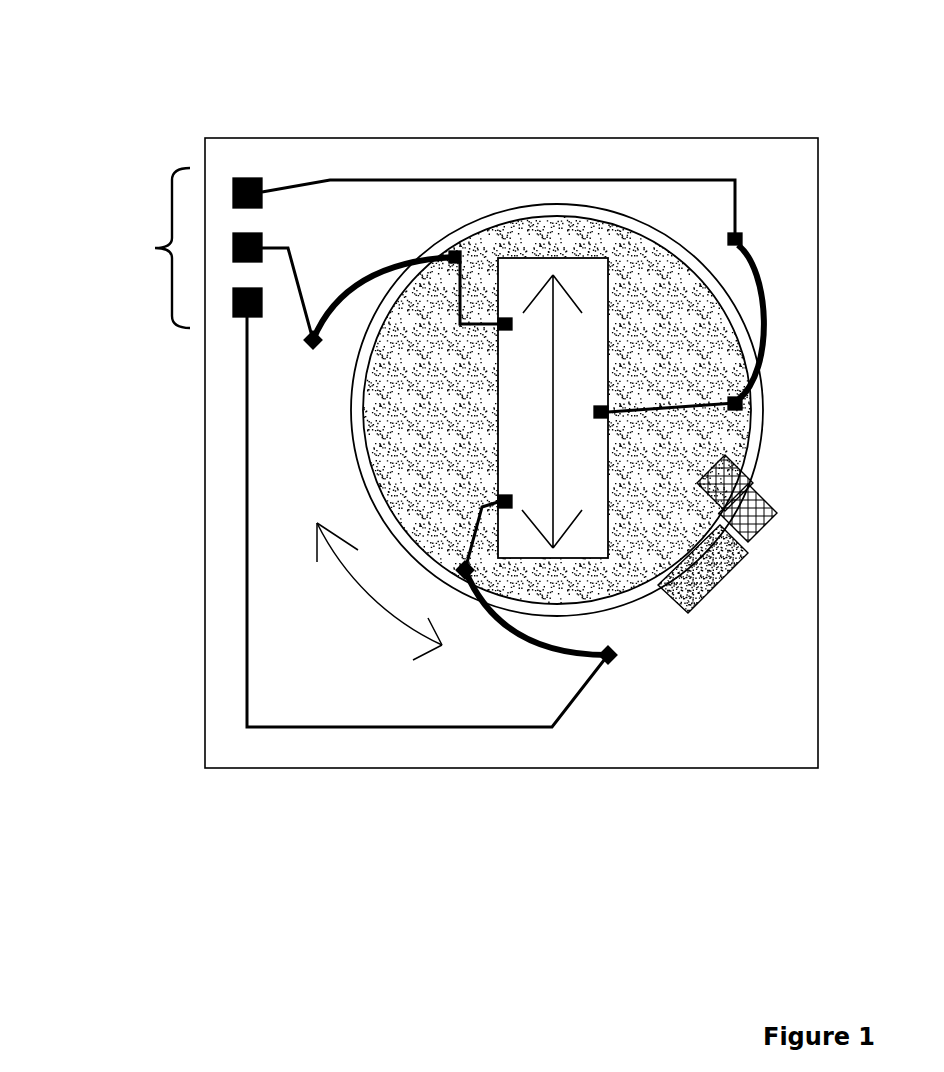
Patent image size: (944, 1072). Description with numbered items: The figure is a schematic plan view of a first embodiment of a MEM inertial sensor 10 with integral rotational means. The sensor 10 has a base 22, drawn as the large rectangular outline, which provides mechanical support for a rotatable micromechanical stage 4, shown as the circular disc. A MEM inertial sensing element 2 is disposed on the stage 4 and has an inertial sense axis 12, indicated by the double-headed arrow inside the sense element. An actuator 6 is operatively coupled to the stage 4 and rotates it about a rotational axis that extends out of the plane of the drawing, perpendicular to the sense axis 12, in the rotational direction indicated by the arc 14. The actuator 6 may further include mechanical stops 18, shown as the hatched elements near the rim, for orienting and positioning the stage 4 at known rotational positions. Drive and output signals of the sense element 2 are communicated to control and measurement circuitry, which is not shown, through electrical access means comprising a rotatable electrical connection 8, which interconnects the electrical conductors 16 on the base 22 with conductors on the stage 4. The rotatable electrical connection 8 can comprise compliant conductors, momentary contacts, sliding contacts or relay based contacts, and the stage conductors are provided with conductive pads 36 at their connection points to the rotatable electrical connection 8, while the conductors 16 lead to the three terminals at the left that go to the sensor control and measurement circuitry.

The MEM inertial sensing element 2 is at (553, 408).
The rotatable micromechanical stage 4 is at (557, 410).
The actuator 6 is at (683, 605).
The rotatable electrical connection 8 is at (360, 271).
The MEM inertial sensor 10 is at (679, 82).
The inertial sense axis 12 is at (549, 452).
The arc 14 is at (367, 610).
The electrical conductors 16 is at (452, 311).
The mechanical stops 18 is at (757, 521).
The base 22 is at (511, 453).
The conductive pads 36 is at (447, 246).